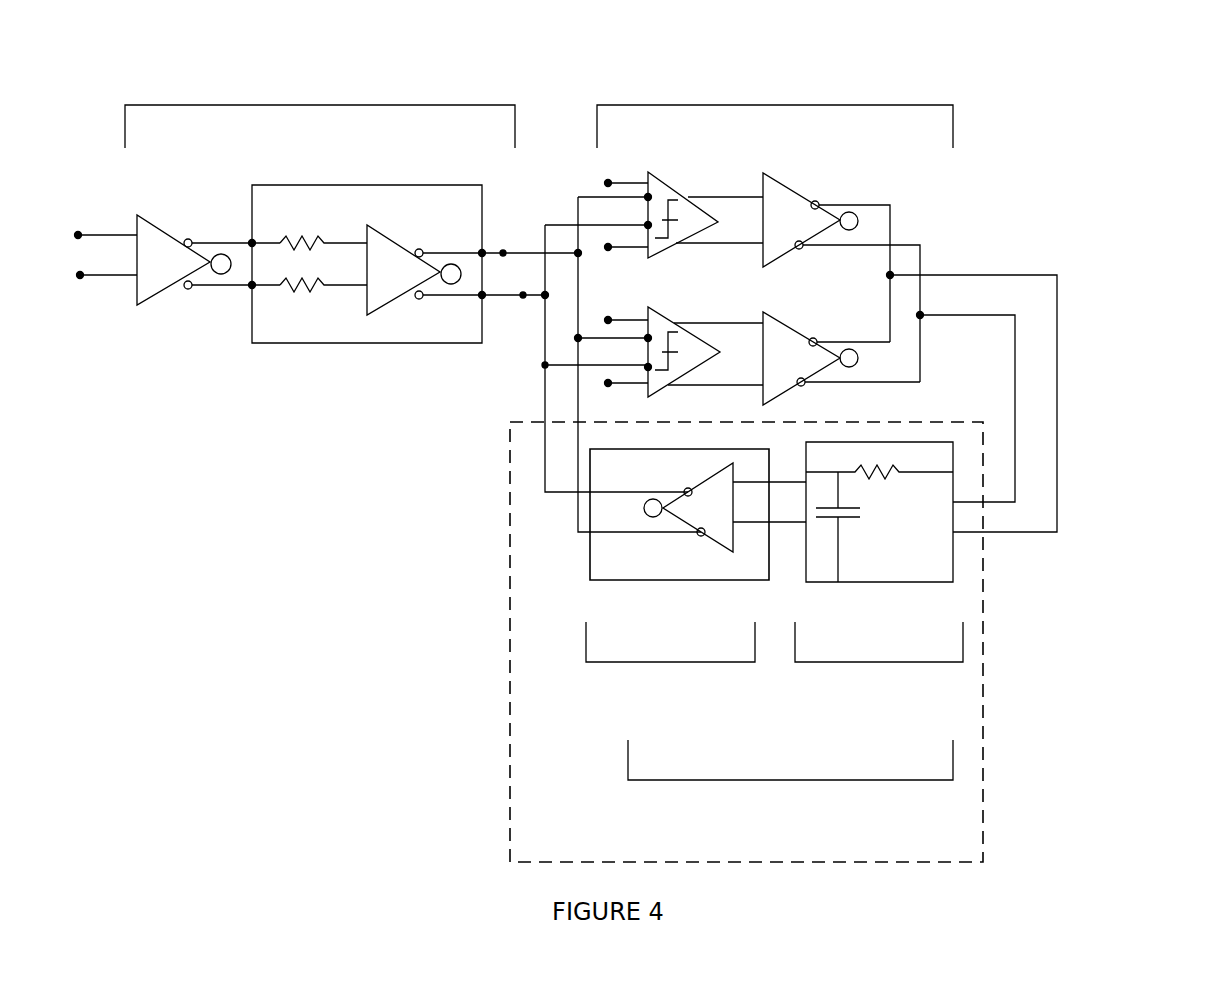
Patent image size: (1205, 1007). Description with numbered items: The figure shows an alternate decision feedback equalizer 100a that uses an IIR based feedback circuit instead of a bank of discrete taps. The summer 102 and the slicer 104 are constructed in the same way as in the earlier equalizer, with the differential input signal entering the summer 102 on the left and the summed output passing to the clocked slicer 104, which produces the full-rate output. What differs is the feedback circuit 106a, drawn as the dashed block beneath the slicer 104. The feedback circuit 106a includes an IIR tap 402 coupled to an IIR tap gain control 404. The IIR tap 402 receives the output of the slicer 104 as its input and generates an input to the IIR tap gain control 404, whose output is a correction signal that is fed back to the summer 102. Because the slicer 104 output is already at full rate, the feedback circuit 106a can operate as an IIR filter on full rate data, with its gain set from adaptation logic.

The alternate decision feedback equalizer 100a is at (1106, 183).
The summer 102 is at (343, 107).
The slicer 104 is at (667, 105).
The feedback circuit 106a is at (525, 712).
The IIR tap 402 is at (893, 558).
The IIR tap gain control 404 is at (600, 543).